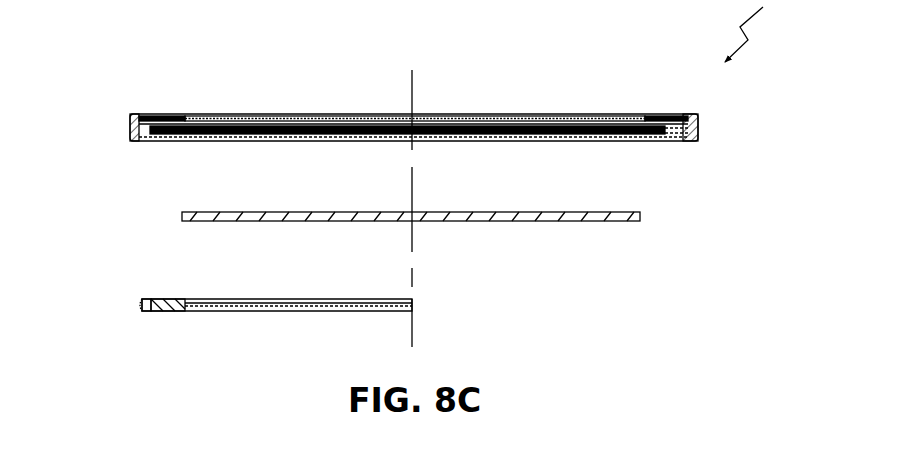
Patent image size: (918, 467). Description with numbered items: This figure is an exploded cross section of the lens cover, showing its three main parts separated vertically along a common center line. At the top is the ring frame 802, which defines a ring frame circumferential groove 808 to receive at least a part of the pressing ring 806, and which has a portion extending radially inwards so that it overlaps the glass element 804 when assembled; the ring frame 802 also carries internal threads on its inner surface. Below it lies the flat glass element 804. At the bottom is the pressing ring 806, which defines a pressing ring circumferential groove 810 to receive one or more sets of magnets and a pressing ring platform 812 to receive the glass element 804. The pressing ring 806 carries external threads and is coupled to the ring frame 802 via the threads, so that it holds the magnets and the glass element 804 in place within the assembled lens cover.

The ring frame 802 is at (137, 118).
The glass element 804 is at (180, 213).
The pressing ring 806 is at (141, 311).
The ring frame circumferential groove 808 is at (132, 126).
The pressing ring circumferential groove 810 is at (141, 299).
The pressing ring platform 812 is at (184, 307).